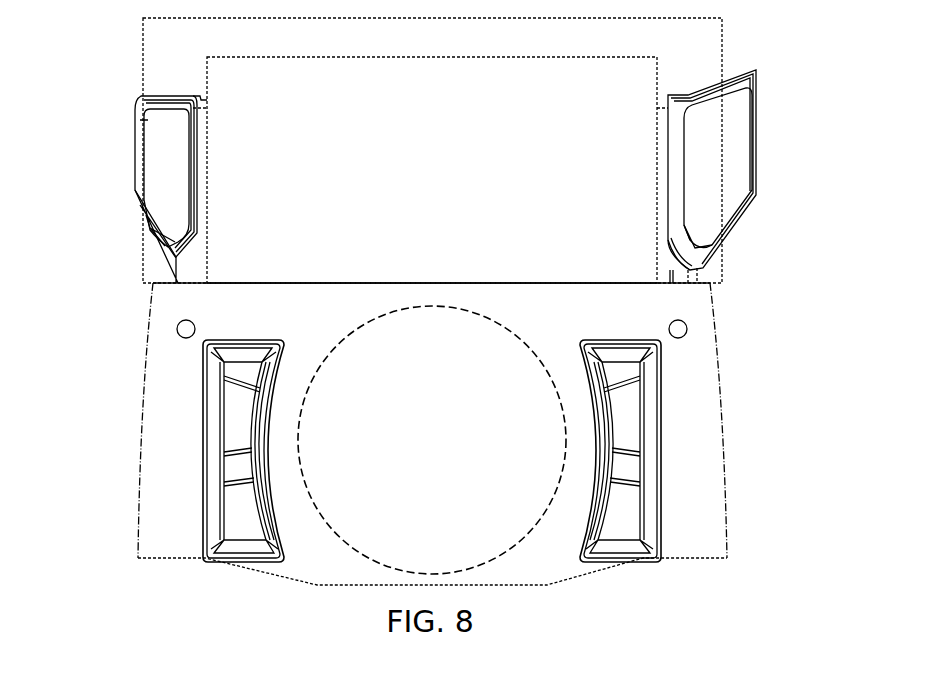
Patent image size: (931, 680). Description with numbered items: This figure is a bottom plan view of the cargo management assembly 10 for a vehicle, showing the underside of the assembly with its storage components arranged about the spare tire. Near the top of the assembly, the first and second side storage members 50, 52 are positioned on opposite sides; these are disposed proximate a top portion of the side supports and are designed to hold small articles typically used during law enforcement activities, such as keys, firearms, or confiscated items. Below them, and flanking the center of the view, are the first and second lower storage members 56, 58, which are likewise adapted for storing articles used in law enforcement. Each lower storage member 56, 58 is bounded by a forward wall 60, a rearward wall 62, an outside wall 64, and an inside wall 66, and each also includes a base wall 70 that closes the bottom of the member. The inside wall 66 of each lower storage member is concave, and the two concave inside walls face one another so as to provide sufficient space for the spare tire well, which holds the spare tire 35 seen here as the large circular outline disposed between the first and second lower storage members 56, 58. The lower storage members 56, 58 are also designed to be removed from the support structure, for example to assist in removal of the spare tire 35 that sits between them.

The cargo management assembly 10 is at (100, 475).
The spare tire 35 is at (344, 350).
The first side storage member 50 is at (154, 170).
The second side storage member 52 is at (704, 170).
The first lower storage member 56 is at (204, 373).
The second lower storage member 58 is at (662, 369).
The forward wall 60 is at (238, 347).
The rearward wall 62 is at (237, 546).
The outside wall 64 is at (220, 413).
The inside wall 66 is at (262, 452).
The base wall 70 is at (247, 513).